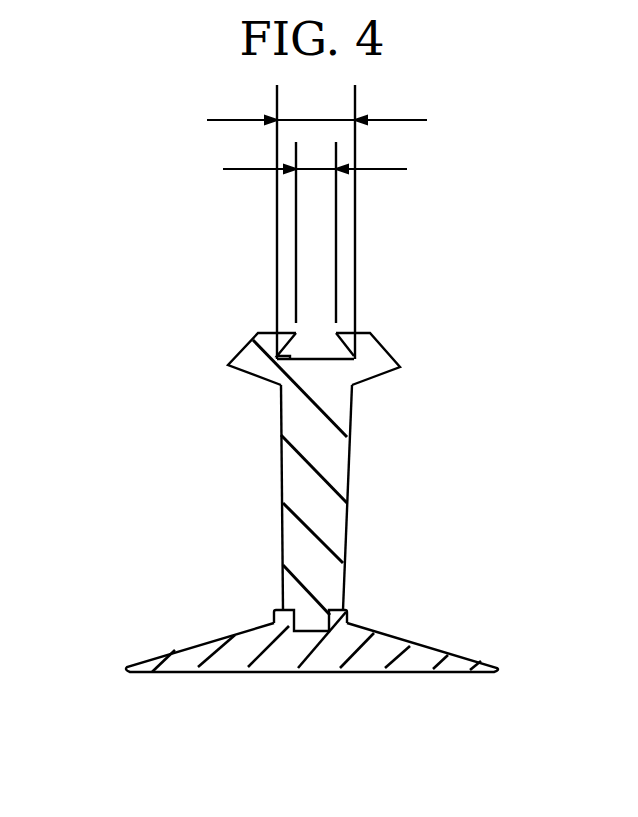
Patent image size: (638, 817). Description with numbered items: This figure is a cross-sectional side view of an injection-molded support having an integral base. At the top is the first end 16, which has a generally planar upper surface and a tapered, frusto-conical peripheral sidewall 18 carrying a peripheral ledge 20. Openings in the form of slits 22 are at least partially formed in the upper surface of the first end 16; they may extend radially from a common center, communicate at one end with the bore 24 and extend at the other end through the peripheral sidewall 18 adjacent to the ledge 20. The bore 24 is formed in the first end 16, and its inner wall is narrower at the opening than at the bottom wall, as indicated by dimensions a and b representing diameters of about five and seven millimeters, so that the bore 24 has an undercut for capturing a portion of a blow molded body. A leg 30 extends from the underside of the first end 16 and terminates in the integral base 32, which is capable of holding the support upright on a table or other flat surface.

The first end 16 is at (250, 297).
The peripheral sidewall 18 is at (170, 395).
The peripheral ledge 20 is at (237, 360).
The slits 22 is at (380, 342).
The bore 24 is at (272, 383).
The leg 30 is at (330, 543).
The integral base 32 is at (187, 655).